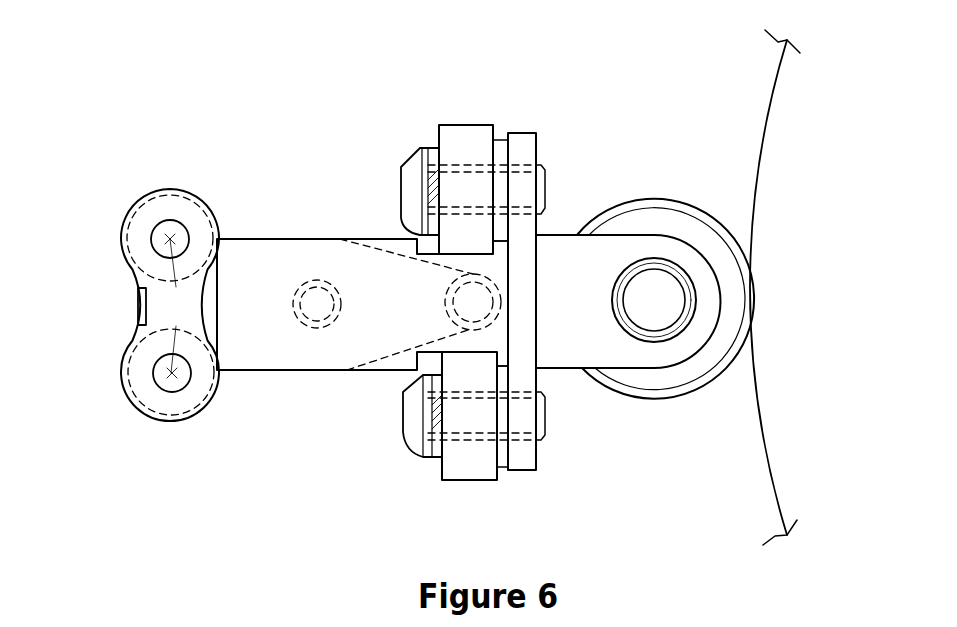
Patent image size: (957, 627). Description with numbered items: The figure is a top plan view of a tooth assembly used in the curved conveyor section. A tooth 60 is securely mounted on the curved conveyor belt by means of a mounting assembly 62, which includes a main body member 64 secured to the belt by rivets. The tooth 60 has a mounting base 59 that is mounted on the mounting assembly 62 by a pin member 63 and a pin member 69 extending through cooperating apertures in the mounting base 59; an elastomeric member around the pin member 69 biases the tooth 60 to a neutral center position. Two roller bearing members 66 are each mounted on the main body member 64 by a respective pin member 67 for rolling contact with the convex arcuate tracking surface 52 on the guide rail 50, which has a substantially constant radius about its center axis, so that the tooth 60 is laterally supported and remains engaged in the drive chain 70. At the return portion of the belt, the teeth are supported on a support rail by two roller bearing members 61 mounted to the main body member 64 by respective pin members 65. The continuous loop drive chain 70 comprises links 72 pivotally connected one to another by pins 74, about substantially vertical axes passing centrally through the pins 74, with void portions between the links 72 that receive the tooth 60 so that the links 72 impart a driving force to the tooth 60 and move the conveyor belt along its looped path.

The guide rail 50 is at (786, 226).
The convex arcuate tracking surface 52 is at (757, 163).
The mounting base 59 is at (383, 258).
The tooth 60 is at (140, 325).
The roller bearing member 61 is at (460, 140).
The mounting assembly 62 is at (423, 84).
The pin member 63 is at (462, 308).
The main body member 64 is at (390, 362).
The pin member 65 is at (417, 163).
The roller bearing member 66 is at (672, 388).
The pin member 67 is at (648, 308).
The pin member 69 is at (313, 312).
The continuous loop drive chain 70 is at (175, 124).
The link 72 is at (123, 262).
The pin 74 is at (178, 234).